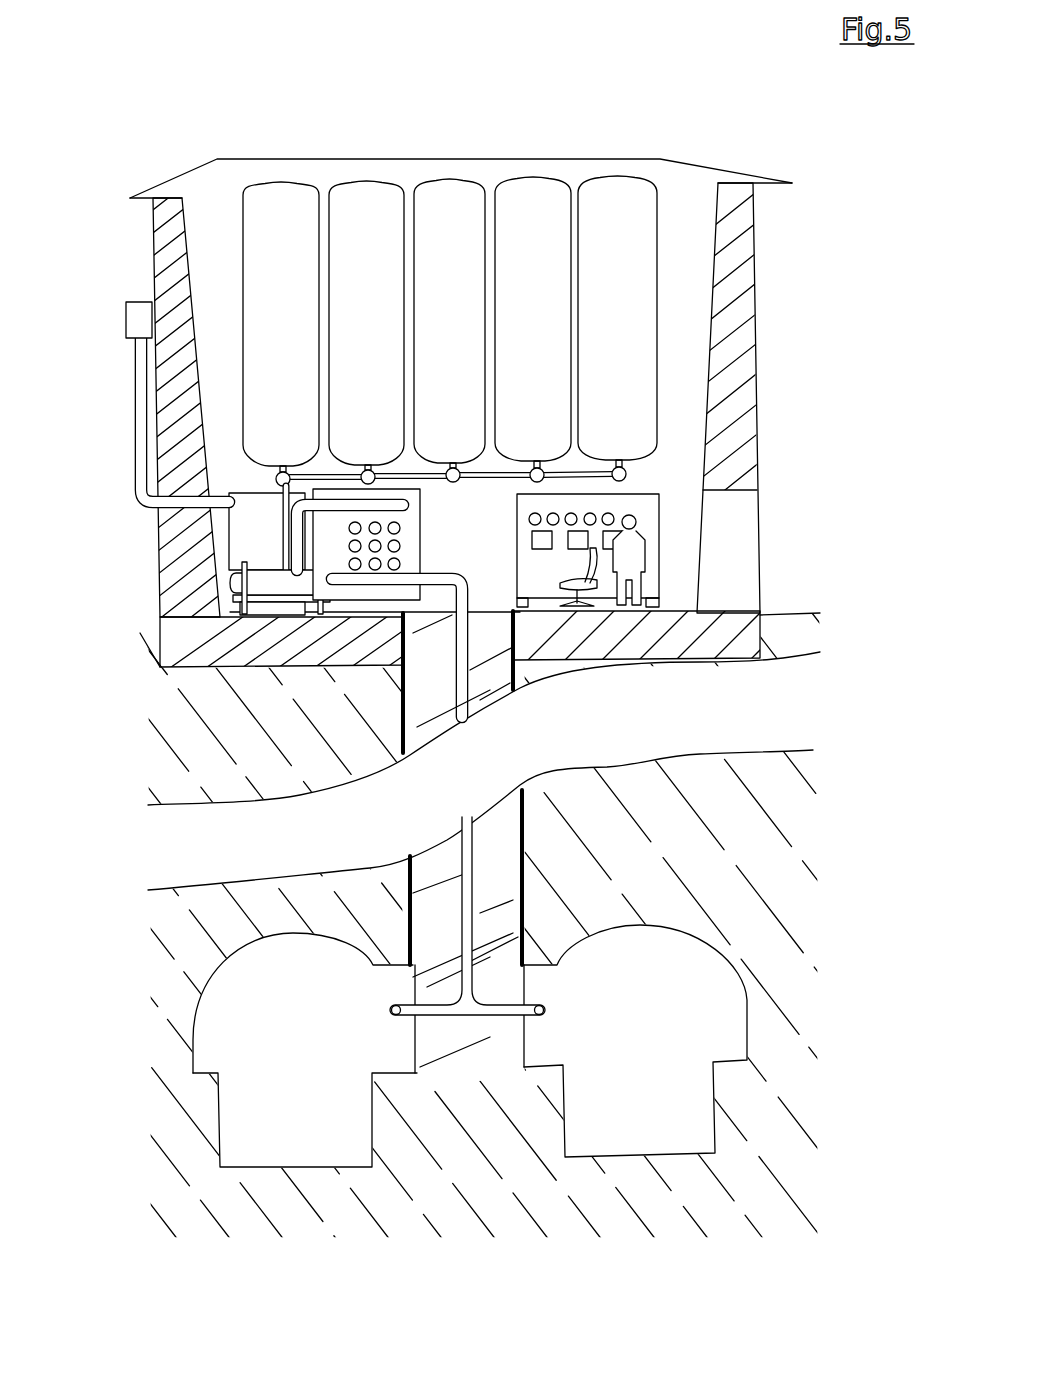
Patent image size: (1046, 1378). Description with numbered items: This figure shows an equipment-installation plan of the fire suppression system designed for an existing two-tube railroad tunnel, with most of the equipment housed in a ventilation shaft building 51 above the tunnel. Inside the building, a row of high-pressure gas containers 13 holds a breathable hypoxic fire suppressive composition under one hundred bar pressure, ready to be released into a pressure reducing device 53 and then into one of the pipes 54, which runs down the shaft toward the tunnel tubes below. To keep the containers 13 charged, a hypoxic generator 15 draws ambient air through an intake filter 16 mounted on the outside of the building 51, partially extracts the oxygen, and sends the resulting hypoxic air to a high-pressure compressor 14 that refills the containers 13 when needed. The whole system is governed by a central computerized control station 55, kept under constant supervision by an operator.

The high-pressure gas containers 13 is at (535, 202).
The high-pressure compressor 14 is at (407, 540).
The hypoxic generator 15 is at (198, 531).
The intake filter 16 is at (138, 320).
The ventilation shaft building 51 is at (782, 298).
The pressure reducing device 53 is at (280, 585).
The pipes 54 is at (478, 857).
The central computerized control station 55 is at (652, 555).